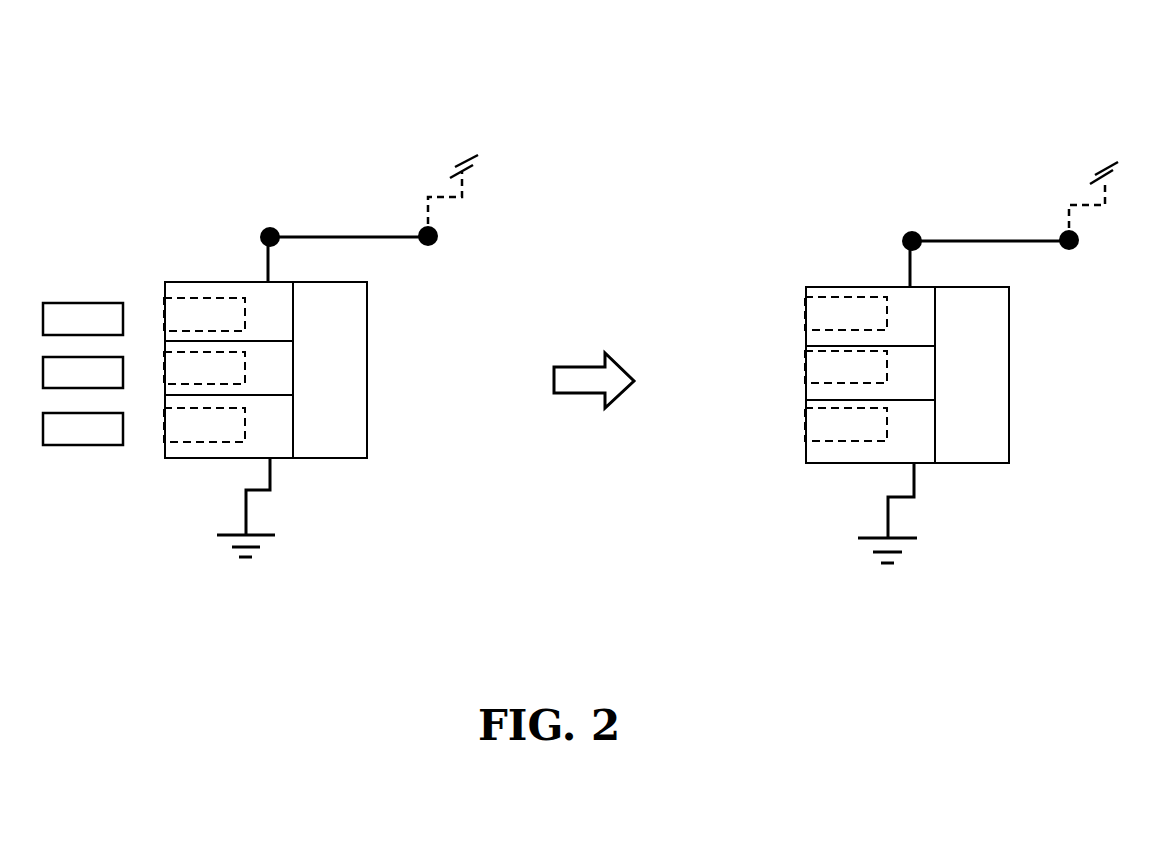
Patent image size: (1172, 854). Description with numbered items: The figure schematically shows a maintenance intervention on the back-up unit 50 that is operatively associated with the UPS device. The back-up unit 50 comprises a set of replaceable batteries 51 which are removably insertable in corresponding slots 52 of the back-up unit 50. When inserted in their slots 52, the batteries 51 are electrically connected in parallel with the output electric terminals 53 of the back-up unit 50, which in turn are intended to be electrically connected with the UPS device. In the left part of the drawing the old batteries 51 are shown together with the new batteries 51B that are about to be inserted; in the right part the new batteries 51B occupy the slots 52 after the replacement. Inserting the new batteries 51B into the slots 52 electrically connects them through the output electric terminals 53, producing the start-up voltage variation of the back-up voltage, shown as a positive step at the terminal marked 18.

The back-up unit 50 is at (203, 128).
The replaceable batteries 51 is at (220, 308).
The new batteries 51B is at (85, 276).
The slots 52 is at (186, 448).
The output electric terminals 53 is at (273, 230).
The bias terminal 18 is at (425, 246).